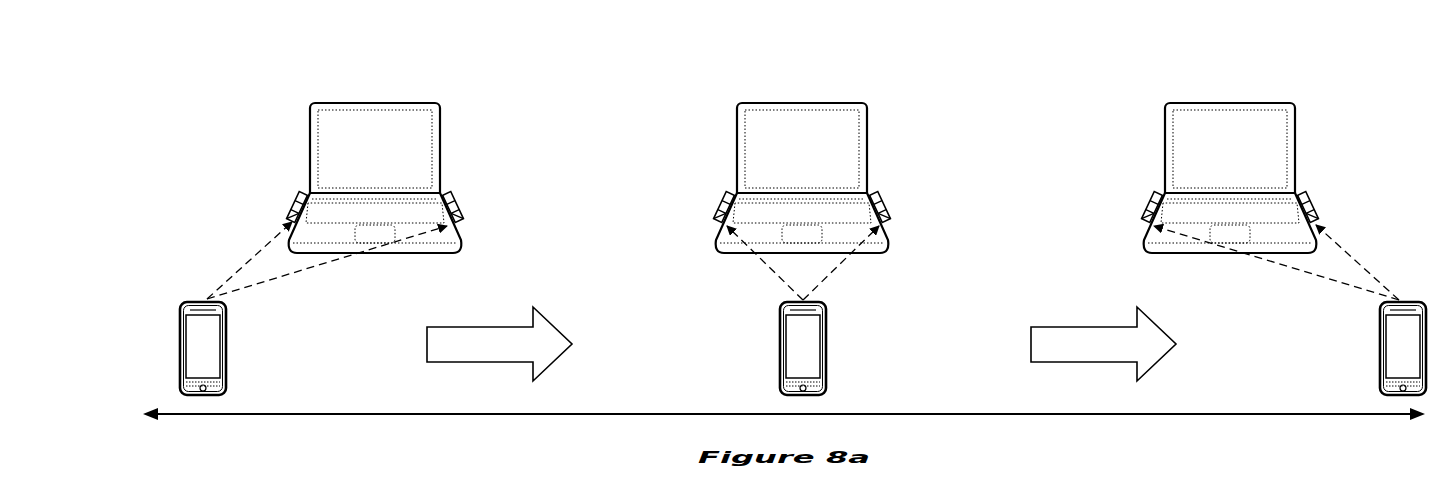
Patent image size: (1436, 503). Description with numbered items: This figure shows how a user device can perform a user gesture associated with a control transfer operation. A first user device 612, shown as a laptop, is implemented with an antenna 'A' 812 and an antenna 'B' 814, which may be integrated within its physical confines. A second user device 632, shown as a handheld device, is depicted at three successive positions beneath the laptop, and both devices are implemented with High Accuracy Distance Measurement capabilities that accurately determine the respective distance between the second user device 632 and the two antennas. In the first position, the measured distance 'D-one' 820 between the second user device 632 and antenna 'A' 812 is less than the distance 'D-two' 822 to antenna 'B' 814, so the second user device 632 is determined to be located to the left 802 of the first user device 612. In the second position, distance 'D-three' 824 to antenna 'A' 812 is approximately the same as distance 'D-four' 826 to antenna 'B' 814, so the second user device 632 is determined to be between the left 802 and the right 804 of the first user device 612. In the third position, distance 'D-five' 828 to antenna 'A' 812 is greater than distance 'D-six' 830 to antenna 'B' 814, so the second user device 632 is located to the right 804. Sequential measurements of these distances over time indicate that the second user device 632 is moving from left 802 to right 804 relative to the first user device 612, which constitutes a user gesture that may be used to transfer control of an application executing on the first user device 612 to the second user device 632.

The user device '1' 612 is at (1215, 80).
The antenna 'A' 812 is at (1158, 197).
The antenna 'B' 814 is at (1339, 180).
The user device '2' 632 is at (226, 336).
The distance 'D1' 820 is at (253, 252).
The distance 'D2' 822 is at (303, 268).
The distance 'D3' 824 is at (765, 268).
The distance 'D4' 826 is at (833, 268).
The distance 'D5' 828 is at (1318, 275).
The distance 'D6' 830 is at (1366, 268).
The left 802 is at (177, 417).
The right 804 is at (1389, 417).